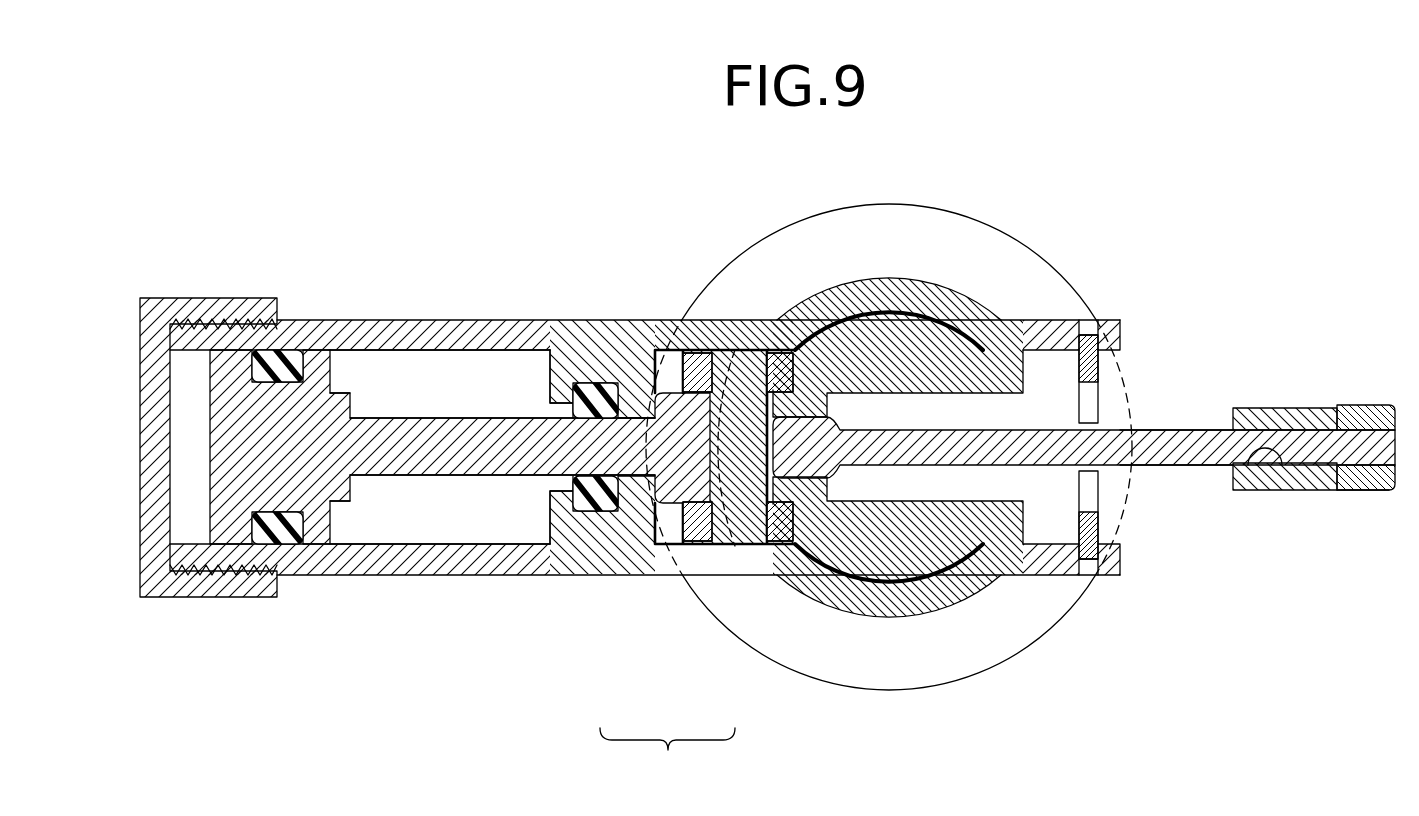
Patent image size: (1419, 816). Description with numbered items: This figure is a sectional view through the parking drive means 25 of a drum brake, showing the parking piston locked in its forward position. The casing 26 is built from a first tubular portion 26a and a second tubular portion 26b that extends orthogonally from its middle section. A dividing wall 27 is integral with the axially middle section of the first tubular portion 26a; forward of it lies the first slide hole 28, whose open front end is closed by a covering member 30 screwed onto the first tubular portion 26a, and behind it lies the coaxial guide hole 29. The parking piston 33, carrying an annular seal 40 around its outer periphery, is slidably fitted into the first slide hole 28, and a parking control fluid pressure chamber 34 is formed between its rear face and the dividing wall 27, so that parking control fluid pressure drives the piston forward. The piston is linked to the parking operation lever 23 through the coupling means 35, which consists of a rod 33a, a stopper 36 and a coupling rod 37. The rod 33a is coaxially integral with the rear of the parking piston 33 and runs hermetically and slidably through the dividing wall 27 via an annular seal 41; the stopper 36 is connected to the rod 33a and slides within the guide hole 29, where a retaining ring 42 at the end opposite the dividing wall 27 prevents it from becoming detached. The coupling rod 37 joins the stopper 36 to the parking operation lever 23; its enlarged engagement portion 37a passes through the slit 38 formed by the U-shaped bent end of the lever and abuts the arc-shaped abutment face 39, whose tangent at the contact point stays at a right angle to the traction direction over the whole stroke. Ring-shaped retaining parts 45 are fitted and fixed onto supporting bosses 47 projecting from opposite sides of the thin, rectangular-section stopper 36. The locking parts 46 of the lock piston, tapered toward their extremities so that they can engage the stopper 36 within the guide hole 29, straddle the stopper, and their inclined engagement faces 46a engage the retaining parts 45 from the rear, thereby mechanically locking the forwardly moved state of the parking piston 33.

The parking operation lever 23 is at (1290, 408).
The parking drive means 25 is at (326, 313).
The casing 26 is at (667, 758).
The first tubular portion 26a is at (640, 576).
The second tubular portion 26b is at (733, 578).
The dividing wall 27 is at (547, 388).
The first slide hole 28 is at (364, 360).
The guide hole 29 is at (1060, 366).
The covering member 30 is at (187, 308).
The parking piston 33 is at (220, 396).
The rod 33a is at (420, 453).
The parking control fluid pressure chamber 34 is at (480, 520).
The coupling means 35 is at (1184, 422).
The stopper 36 is at (665, 355).
The coupling rod 37 is at (1170, 447).
The enlarged engagement portion 37a is at (1352, 405).
The slit 38 is at (1283, 467).
The abutment face 39 is at (1353, 482).
The annular seal 40 is at (280, 533).
The annular seal 41 is at (592, 381).
The retaining ring 42 is at (1095, 372).
The retaining parts 45 is at (693, 352).
The locking parts 46 is at (893, 330).
The engagement faces 46a is at (780, 345).
The supporting bosses 47 is at (731, 355).